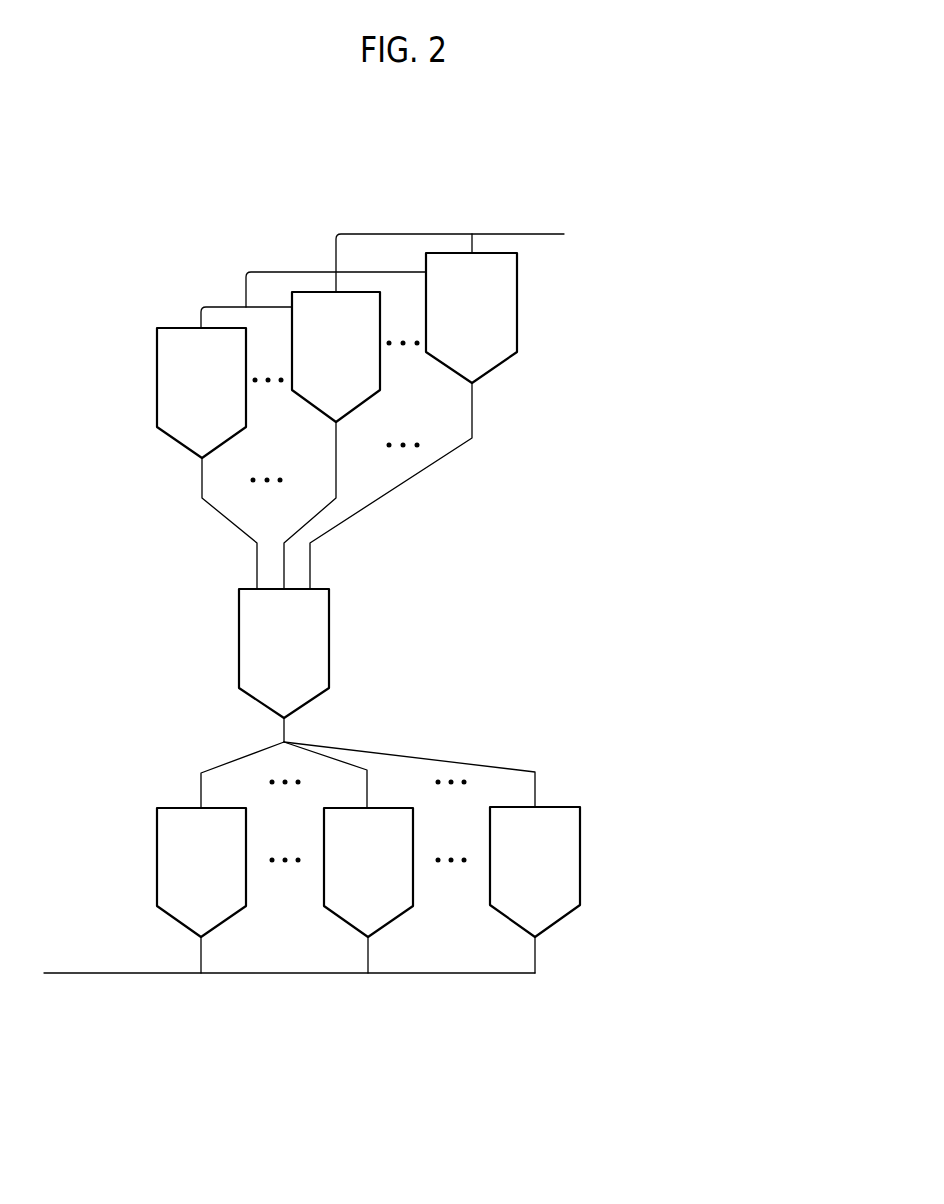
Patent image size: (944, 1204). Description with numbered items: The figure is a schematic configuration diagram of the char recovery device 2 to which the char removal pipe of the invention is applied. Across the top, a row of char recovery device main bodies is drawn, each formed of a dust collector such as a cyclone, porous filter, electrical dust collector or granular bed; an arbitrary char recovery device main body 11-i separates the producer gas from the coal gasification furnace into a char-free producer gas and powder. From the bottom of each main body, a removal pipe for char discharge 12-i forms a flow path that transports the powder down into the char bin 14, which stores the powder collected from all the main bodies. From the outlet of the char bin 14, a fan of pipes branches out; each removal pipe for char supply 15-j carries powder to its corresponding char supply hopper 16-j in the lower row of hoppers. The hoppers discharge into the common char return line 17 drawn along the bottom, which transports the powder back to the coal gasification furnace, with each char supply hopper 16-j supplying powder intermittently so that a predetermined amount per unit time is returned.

The char recovery device 2 is at (535, 171).
The char recovery device main body 11-i is at (312, 292).
The removal pipe for char discharge 12-i is at (317, 515).
The char bin 14 is at (330, 638).
The removal pipe for char supply 15-j is at (349, 765).
The char supply hopper 16-j is at (345, 923).
The char return line 17 is at (448, 973).